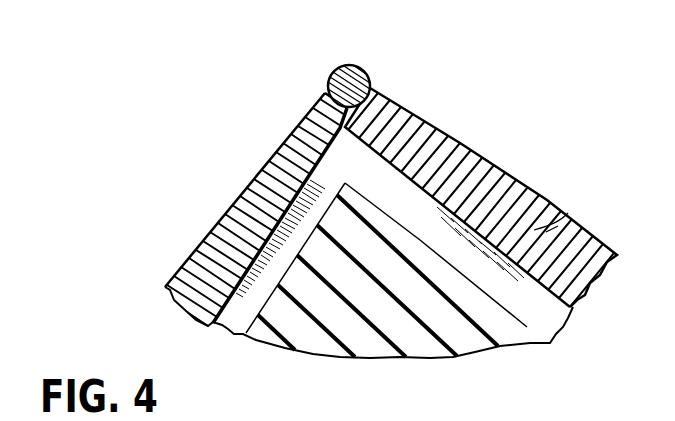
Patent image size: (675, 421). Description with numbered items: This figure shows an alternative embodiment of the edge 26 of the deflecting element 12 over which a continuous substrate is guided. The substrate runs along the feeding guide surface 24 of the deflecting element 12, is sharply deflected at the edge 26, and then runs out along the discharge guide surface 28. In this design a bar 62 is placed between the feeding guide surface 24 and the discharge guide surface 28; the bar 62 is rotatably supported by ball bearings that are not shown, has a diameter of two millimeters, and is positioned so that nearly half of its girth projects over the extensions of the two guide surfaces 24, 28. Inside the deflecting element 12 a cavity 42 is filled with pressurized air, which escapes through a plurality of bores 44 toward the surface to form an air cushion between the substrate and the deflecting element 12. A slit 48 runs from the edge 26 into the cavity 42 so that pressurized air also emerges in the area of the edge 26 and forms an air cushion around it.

The deflecting element 12 is at (206, 110).
The feeding guide surface 24 is at (215, 218).
The edge 26 is at (331, 63).
The bar 62 is at (369, 78).
The slit 48 is at (322, 100).
The cavity 42 is at (452, 137).
The discharge guide surface 28 is at (530, 187).
The bores 44 is at (568, 213).